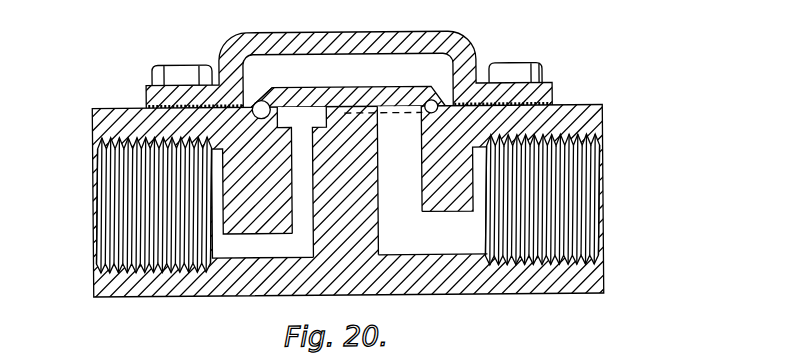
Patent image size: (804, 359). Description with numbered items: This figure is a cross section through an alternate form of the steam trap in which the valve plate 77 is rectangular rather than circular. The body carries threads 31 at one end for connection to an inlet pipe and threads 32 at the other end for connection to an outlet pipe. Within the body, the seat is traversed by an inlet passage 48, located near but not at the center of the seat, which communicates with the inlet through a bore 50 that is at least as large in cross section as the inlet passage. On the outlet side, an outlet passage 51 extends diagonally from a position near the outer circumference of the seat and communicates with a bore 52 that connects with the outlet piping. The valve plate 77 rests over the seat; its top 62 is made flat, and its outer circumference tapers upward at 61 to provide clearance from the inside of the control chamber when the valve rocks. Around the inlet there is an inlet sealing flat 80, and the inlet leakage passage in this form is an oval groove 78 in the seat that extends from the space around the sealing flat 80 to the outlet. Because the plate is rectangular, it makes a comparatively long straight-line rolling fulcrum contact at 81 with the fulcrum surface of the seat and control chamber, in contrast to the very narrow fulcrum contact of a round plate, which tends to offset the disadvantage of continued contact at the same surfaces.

The inlet sealing flat 80 is at (473, 52).
The tapered outer circumference of valve plate 61 is at (262, 100).
The rolling fulcrum contact 81 is at (265, 110).
The top of valve plate 62 is at (318, 86).
The valve plate 77 is at (353, 92).
The oval groove 78 is at (427, 112).
The threads 31 is at (591, 142).
The threads 32 is at (102, 140).
The outlet passage 51 is at (300, 167).
The bore 52 is at (270, 255).
The inlet passage 48 is at (380, 226).
The bore 50 is at (467, 249).